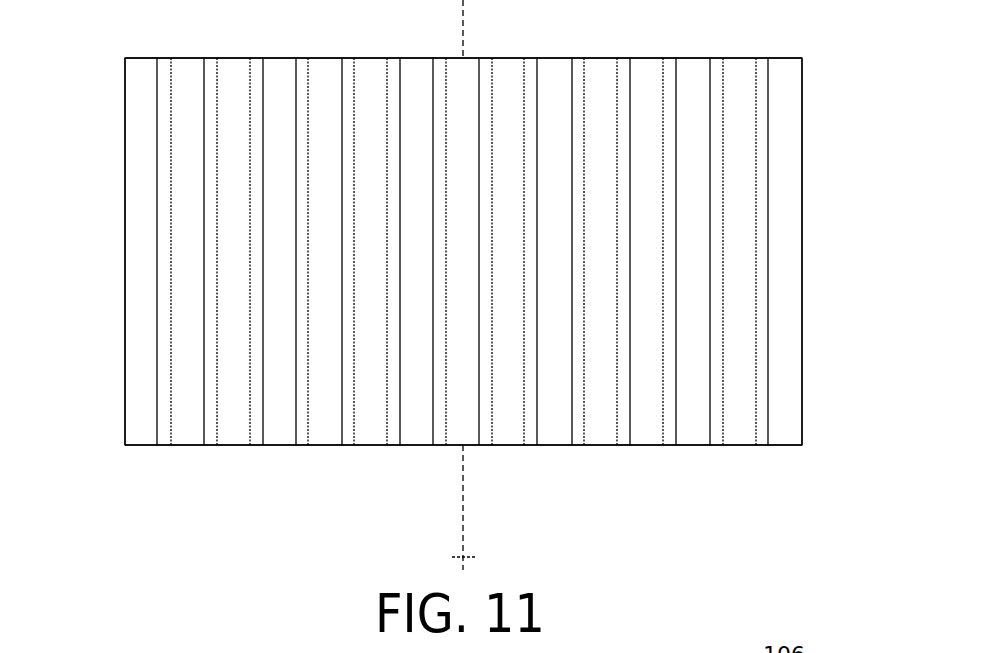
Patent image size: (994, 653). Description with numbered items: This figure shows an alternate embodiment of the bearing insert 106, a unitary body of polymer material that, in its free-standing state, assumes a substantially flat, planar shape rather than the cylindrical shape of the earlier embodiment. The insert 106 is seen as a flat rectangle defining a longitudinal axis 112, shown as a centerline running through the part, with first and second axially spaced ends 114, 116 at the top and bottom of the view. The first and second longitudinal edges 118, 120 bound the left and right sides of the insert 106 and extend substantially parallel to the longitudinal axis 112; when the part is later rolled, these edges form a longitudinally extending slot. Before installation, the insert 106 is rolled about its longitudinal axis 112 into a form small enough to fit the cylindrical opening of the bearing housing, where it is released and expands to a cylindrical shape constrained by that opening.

The bearing insert 106 is at (830, 237).
The longitudinal axis 112 is at (465, 25).
The first axially spaced end 114 is at (648, 445).
The second axially spaced end 116 is at (608, 58).
The first longitudinal edge 118 is at (802, 320).
The second longitudinal edge 120 is at (124, 265).